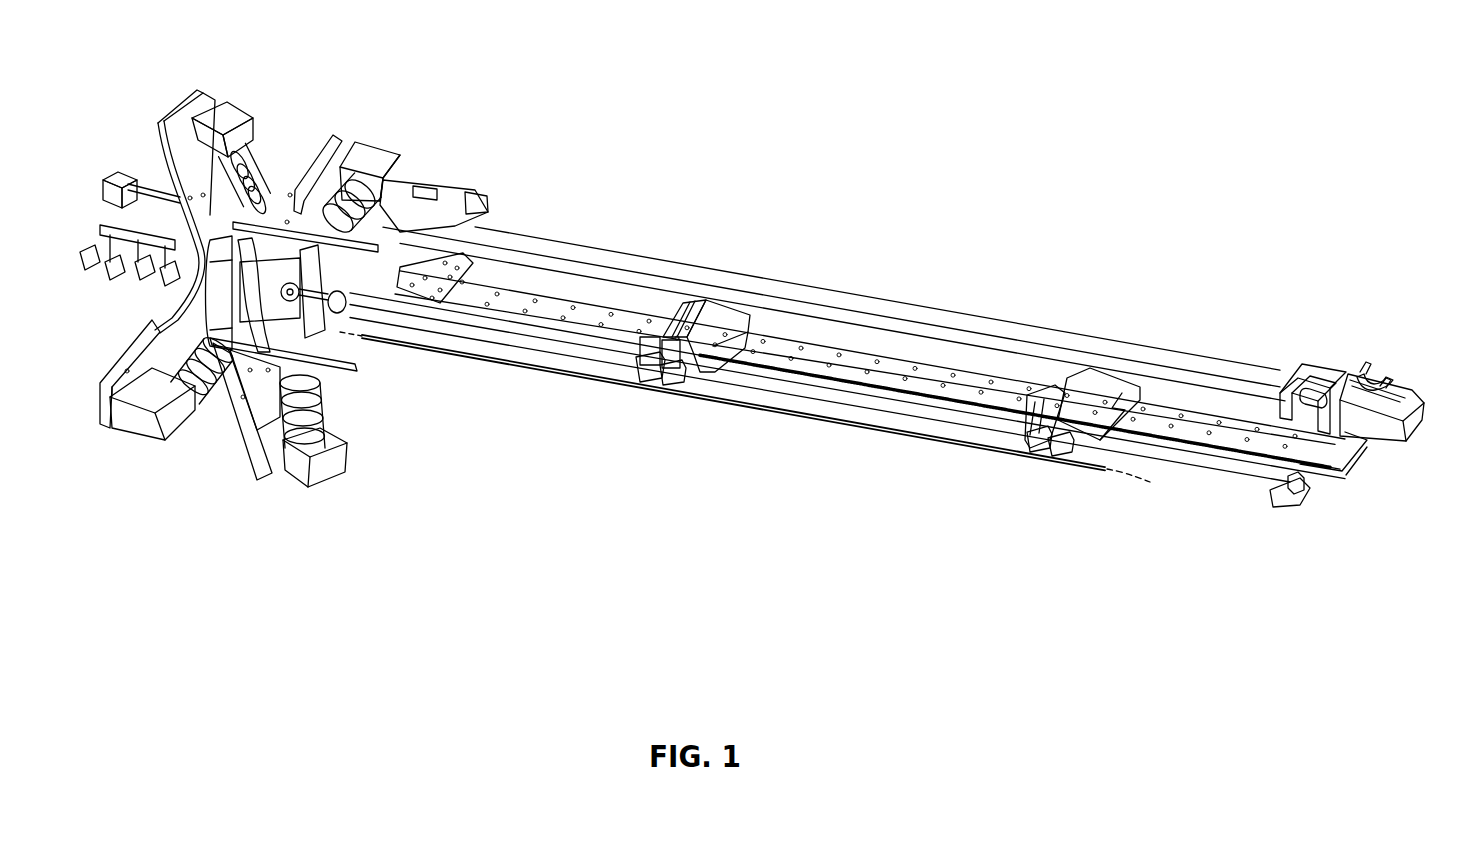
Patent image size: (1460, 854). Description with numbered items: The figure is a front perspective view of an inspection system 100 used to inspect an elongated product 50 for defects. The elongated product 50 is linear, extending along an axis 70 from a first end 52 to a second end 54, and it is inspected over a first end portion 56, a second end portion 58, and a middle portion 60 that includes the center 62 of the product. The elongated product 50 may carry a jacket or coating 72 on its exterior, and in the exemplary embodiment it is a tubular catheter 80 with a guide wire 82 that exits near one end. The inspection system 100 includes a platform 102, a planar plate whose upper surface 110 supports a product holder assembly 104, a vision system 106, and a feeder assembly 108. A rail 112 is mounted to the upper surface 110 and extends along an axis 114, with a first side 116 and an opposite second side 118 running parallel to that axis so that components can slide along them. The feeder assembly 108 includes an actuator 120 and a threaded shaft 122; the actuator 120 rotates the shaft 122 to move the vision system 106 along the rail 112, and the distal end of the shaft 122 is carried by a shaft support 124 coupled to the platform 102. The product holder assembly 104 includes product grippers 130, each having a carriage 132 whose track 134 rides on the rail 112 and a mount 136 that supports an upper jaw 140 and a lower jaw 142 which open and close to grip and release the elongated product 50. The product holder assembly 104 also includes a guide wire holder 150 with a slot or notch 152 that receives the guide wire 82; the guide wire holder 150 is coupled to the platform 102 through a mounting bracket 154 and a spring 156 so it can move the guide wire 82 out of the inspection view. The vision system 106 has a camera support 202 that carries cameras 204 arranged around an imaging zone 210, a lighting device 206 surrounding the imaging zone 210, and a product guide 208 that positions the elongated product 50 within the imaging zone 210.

The inspection system 100 is at (720, 90).
The platform 102 is at (985, 333).
The product holder assembly 104 is at (1175, 393).
The vision system 106 is at (291, 285).
The feeder assembly 108 is at (1390, 365).
The upper surface 110 is at (1243, 412).
The rail 112 is at (1322, 455).
The axis 114 is at (1350, 460).
The first side 116 is at (848, 360).
The second side 118 is at (903, 335).
The actuator 120 is at (1367, 452).
The shaft 122 is at (1128, 345).
The shaft support 124 is at (135, 185).
The product gripper 130 is at (692, 280).
The carriage 132 is at (745, 315).
The track 134 is at (768, 333).
The mount 136 is at (735, 312).
The upper jaw 140 is at (684, 297).
The lower jaw 142 is at (672, 385).
The guide wire holder 150 is at (1235, 472).
The slot or notch 152 is at (1032, 413).
The mounting bracket 154 is at (1302, 508).
The spring 156 is at (1300, 492).
The camera support 202 is at (180, 322).
The cameras 204 is at (180, 432).
The lighting device 206 is at (211, 355).
The product guide 208 is at (345, 262).
The imaging zone 210 is at (298, 170).
The elongated product 50 is at (763, 428).
The first end 52 is at (1105, 470).
The second end 54 is at (364, 342).
The first end portion 56 is at (1007, 478).
The second end portion 58 is at (458, 385).
The middle portion 60 is at (680, 418).
The center 62 is at (717, 402).
The axis 70 is at (1130, 477).
The jacket or coating 72 is at (918, 440).
The catheter 80 is at (849, 448).
The guide wire 82 is at (1060, 468).